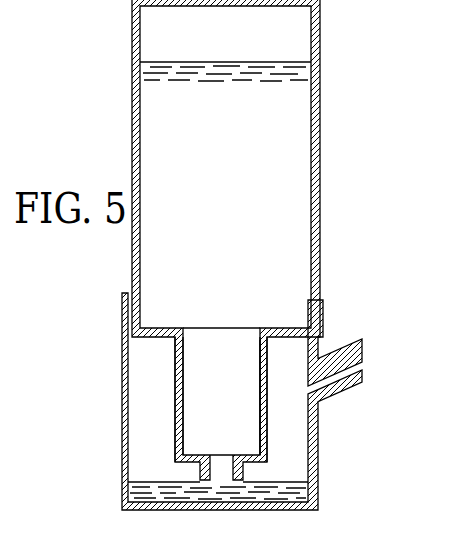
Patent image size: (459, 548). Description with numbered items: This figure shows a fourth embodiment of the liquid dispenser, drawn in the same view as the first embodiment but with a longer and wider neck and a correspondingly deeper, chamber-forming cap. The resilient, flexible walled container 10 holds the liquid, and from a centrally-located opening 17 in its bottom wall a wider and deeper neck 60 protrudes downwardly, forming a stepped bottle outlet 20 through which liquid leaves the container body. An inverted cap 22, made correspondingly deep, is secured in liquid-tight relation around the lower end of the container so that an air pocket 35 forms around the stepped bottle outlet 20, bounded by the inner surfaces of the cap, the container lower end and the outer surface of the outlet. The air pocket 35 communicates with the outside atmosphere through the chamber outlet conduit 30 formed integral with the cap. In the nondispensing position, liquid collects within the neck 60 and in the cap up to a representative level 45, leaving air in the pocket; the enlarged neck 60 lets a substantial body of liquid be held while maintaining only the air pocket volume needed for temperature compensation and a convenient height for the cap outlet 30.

The container 10 is at (340, 46).
The opening 17 is at (207, 329).
The cap 22 is at (228, 401).
The chamber outlet conduit 30 is at (352, 342).
The air pocket 35 is at (170, 389).
The bottle outlet 20 is at (200, 399).
The neck 60 is at (260, 369).
The level 45 is at (152, 478).